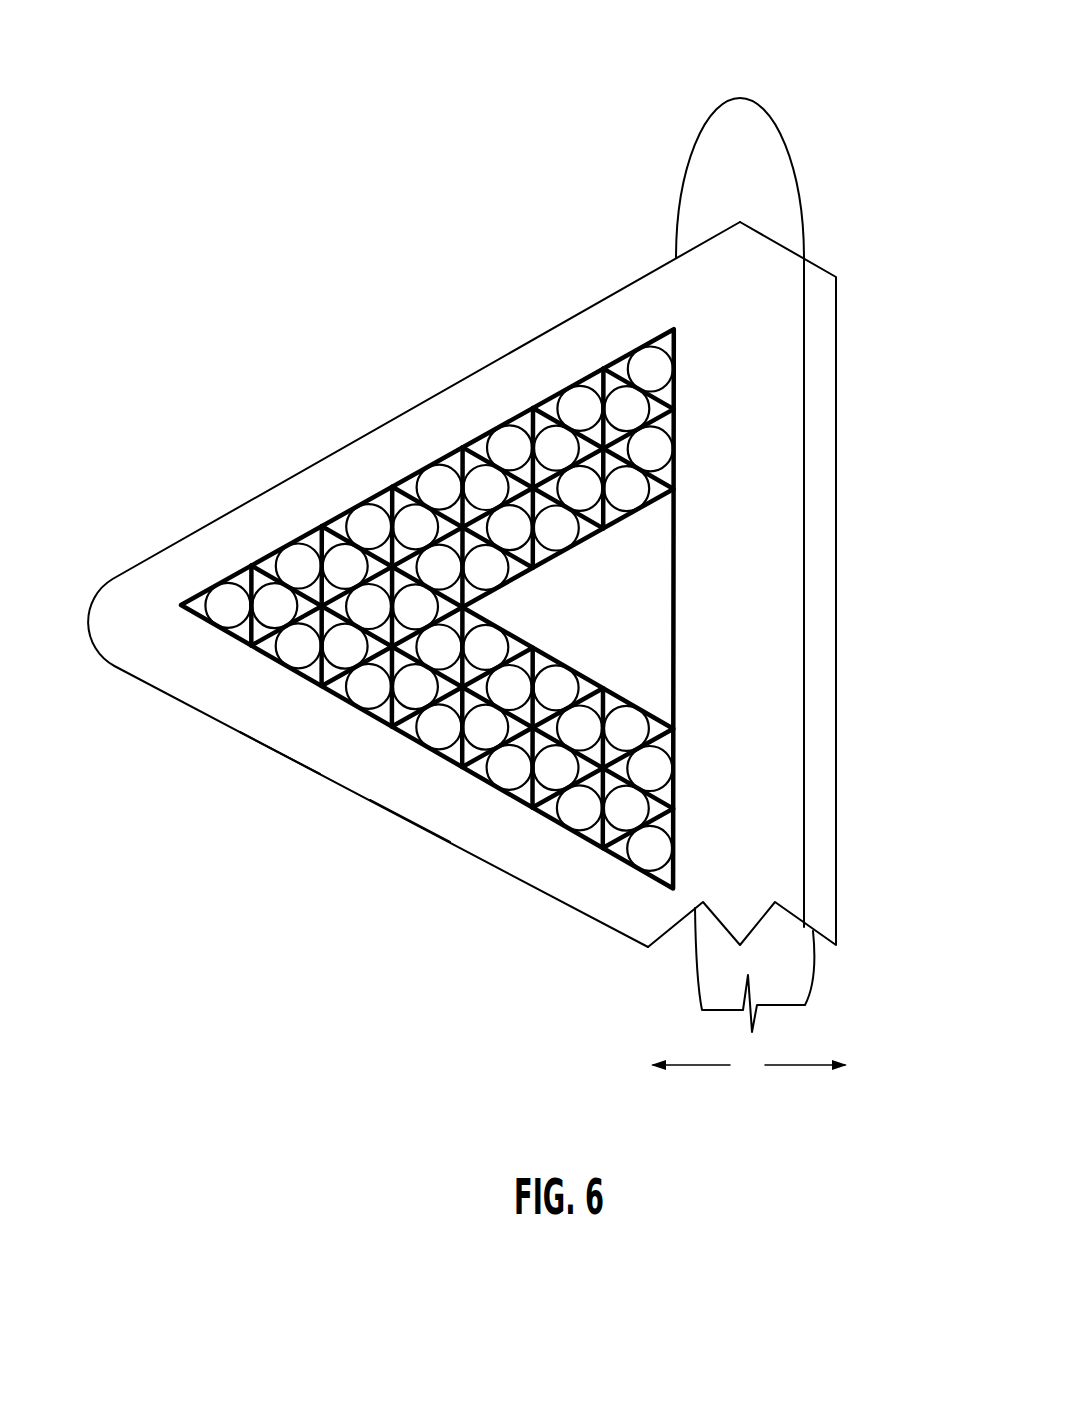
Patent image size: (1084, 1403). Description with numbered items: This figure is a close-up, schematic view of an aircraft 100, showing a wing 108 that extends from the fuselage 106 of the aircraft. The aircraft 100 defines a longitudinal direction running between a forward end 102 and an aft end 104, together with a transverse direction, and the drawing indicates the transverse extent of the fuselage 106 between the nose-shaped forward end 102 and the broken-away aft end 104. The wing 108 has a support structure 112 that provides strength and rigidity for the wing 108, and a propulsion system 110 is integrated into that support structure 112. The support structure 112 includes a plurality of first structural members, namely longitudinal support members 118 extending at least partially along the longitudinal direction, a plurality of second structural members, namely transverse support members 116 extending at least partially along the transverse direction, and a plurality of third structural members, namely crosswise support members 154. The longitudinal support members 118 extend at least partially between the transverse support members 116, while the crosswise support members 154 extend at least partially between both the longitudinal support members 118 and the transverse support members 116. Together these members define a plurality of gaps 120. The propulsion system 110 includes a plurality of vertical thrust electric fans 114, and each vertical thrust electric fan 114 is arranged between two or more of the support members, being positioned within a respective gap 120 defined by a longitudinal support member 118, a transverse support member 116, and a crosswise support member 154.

The aircraft 100 is at (819, 90).
The forward end 102 is at (740, 72).
The aft end 104 is at (613, 1029).
The fuselage 106 is at (781, 200).
The wing 108 is at (230, 528).
The propulsion system 110 is at (276, 708).
The support structure 112 is at (404, 772).
The vertical thrust electric fan 114 is at (441, 485).
The transverse support member 116 is at (412, 497).
The longitudinal support member 118 is at (517, 425).
The gap 120 is at (330, 522).
The crosswise support member 154 is at (575, 505).